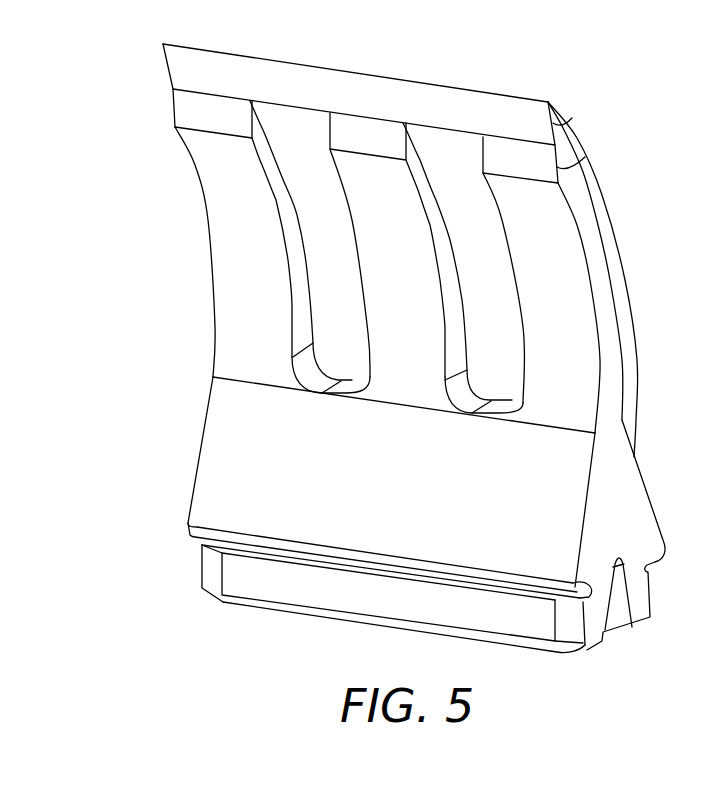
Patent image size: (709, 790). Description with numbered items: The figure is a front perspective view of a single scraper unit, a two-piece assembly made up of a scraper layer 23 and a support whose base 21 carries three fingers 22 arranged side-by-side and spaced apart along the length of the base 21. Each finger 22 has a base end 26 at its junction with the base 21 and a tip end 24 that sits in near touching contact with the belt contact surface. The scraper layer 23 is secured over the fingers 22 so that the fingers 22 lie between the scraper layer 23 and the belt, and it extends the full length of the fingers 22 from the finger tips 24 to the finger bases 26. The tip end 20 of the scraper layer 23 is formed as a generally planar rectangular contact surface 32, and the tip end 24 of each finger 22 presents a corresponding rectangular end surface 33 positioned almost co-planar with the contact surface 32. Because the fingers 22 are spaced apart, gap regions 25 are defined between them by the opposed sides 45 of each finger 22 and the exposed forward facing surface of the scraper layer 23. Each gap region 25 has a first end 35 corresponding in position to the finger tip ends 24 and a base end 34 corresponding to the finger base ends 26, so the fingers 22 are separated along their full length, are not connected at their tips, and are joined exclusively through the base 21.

The tip end of scraper layer 20 is at (568, 120).
The base 21 is at (634, 490).
The finger 22 is at (582, 273).
The scraper layer 23 is at (637, 327).
The tip end of finger 24 is at (585, 157).
The gap region 25 is at (318, 212).
The base end of finger 26 is at (541, 428).
The contact surface 32 is at (337, 76).
The end surface of finger 33 is at (183, 107).
The base end of gap region 34 is at (477, 417).
The first end of gap region 35 is at (440, 133).
The side of finger 45 is at (450, 254).